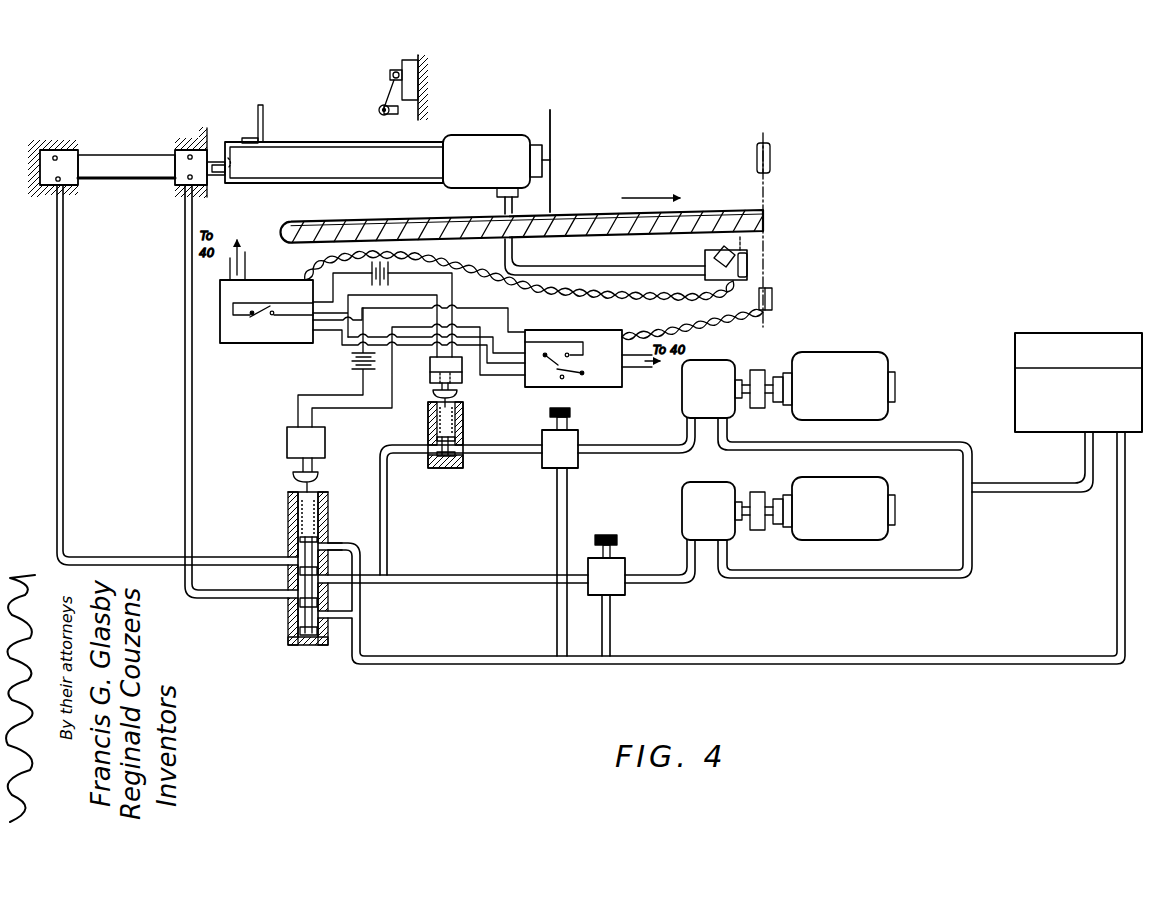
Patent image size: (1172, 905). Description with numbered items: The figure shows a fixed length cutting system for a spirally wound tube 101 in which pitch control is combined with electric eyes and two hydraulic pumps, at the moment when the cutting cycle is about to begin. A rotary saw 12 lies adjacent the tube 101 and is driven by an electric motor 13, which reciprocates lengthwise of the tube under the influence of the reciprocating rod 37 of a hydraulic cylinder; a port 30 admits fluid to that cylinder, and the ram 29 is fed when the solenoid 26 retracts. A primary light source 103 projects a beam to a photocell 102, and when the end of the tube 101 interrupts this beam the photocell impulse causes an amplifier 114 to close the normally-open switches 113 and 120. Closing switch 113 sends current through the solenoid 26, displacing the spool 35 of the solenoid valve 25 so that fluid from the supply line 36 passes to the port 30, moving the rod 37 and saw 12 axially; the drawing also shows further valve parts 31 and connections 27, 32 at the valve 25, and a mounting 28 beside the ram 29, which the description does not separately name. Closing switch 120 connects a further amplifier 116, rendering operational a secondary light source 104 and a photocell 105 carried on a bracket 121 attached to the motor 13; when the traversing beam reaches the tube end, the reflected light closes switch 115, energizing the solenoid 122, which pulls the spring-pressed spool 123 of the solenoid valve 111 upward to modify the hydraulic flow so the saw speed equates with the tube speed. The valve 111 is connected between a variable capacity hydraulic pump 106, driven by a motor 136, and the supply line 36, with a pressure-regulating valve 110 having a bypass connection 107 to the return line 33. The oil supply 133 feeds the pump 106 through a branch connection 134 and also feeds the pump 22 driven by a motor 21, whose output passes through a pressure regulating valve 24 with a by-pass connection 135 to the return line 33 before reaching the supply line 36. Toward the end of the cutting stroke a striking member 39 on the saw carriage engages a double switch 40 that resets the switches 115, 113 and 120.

The rotary saw 12 is at (553, 130).
The electric motor 13 is at (495, 168).
The motor 21 is at (848, 524).
The pump 22 is at (720, 524).
The pressure regulating valve 24 is at (620, 587).
The solenoid valve 25 is at (328, 503).
The solenoid 26 is at (287, 450).
The conduit 27 is at (288, 588).
The bracket 28 is at (182, 198).
The ram 29 is at (124, 156).
The port 30 is at (55, 197).
The valve spool 31 is at (288, 560).
The conduit 32 is at (328, 547).
The return line 33 is at (457, 654).
The spool 35 is at (288, 538).
The supply line 36 is at (467, 570).
The reciprocating rod 37 is at (213, 182).
The striking member 39 is at (257, 113).
The double switch 40 is at (420, 83).
The tube 101 is at (578, 213).
The photocell 102 is at (775, 298).
The primary light source 103 is at (772, 150).
The secondary light source 104 is at (750, 262).
The photocell 105 is at (705, 256).
The hydraulic pump 106 is at (727, 403).
The bypass connection 107 is at (556, 510).
The pressure-regulating valve 110 is at (574, 461).
The solenoid valve 111 is at (428, 430).
The switch 113 is at (545, 358).
The amplifier 114 is at (600, 388).
The switch 115 is at (262, 318).
The amplifier 116 is at (243, 345).
The switch 120 is at (585, 366).
The bracket 121 is at (548, 263).
The solenoid 122 is at (430, 370).
The spool 123 is at (463, 438).
The oil supply 133 is at (1086, 404).
The branch connection 134 is at (838, 580).
The by-pass connection 135 is at (612, 625).
The motor 136 is at (850, 401).